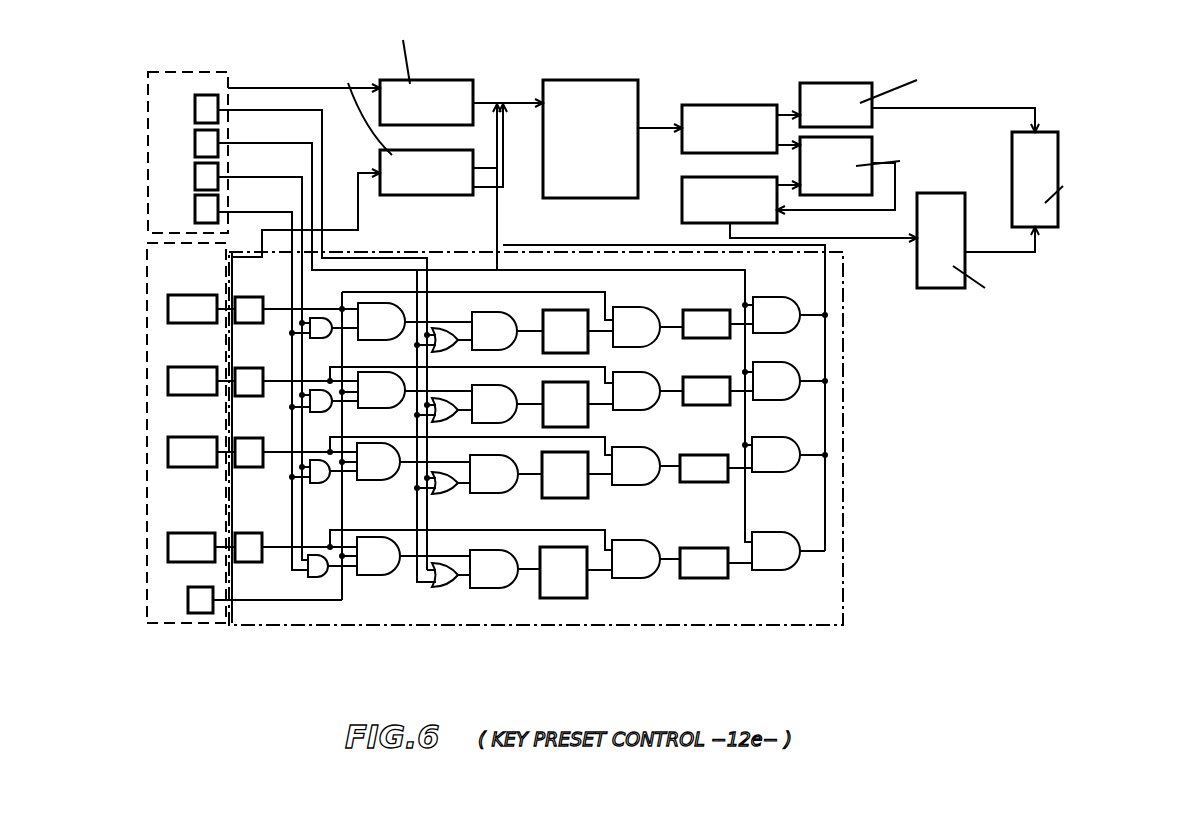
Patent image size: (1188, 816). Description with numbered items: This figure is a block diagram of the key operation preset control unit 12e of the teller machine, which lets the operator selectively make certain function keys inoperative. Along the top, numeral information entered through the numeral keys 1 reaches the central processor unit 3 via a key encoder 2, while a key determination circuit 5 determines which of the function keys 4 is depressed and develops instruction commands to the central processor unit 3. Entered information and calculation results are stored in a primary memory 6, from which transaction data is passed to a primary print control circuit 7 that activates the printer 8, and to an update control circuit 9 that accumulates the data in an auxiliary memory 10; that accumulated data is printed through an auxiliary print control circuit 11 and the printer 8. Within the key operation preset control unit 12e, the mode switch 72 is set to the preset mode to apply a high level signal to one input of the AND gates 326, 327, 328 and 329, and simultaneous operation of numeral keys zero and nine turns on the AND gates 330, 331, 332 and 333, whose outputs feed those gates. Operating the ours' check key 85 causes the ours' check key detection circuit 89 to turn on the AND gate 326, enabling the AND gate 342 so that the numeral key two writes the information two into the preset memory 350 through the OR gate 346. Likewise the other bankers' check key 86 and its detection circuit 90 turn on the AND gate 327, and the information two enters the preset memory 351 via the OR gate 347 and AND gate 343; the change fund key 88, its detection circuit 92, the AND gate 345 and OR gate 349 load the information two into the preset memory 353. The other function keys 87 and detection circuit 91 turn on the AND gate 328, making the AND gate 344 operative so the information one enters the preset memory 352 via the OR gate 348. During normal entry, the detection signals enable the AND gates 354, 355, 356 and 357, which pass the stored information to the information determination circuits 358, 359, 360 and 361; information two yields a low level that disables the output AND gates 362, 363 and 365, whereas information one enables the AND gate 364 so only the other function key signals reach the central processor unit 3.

The numeral keys 1 is at (208, 74).
The key encoder 2 is at (432, 85).
The central processor unit 3 is at (585, 85).
The function keys 4 is at (210, 464).
The key determination circuit 5 is at (425, 185).
The primary memory 6 is at (727, 107).
The primary print control circuit 7 is at (845, 87).
The printer 8 is at (1048, 176).
The update control circuit 9 is at (856, 157).
The auxiliary memory 10 is at (682, 208).
The auxiliary print control circuit 11 is at (943, 280).
The key operation preset control unit 12e is at (607, 628).
The mode switch 72 is at (200, 617).
The ours' check key 85 is at (168, 309).
The other bankers' check key 86 is at (168, 381).
The other function keys 87 is at (168, 452).
The change fund key 88 is at (168, 547).
The ours' check key detection circuit 89 is at (254, 309).
The other bankers' check key detection circuit 90 is at (254, 381).
The other function key detection circuit 91 is at (252, 451).
The change fund key detection circuit 92 is at (248, 546).
The AND gate 326 is at (378, 303).
The AND gate 327 is at (373, 409).
The AND gate 328 is at (365, 470).
The AND gate 329 is at (368, 576).
The AND gate 330 is at (318, 340).
The AND gate 331 is at (318, 412).
The AND gate 332 is at (317, 484).
The AND gate 333 is at (318, 578).
The AND gate 342 is at (490, 318).
The AND gate 343 is at (497, 396).
The AND gate 344 is at (487, 494).
The AND gate 345 is at (487, 589).
The OR gate 346 is at (446, 329).
The OR gate 347 is at (443, 399).
The OR gate 348 is at (445, 495).
The OR gate 349 is at (440, 588).
The preset memory 350 is at (562, 310).
The preset memory 351 is at (584, 418).
The preset memory 352 is at (566, 499).
The preset memory 353 is at (553, 599).
The AND gate 354 is at (634, 318).
The AND gate 355 is at (636, 383).
The AND gate 356 is at (640, 453).
The AND gate 357 is at (632, 546).
The information determination circuit 358 is at (700, 318).
The information determination circuit 359 is at (697, 385).
The information determination circuit 360 is at (697, 458).
The information determination circuit 361 is at (697, 552).
The AND gate 362 is at (772, 305).
The AND gate 363 is at (770, 372).
The AND gate 364 is at (770, 447).
The AND gate 365 is at (768, 541).